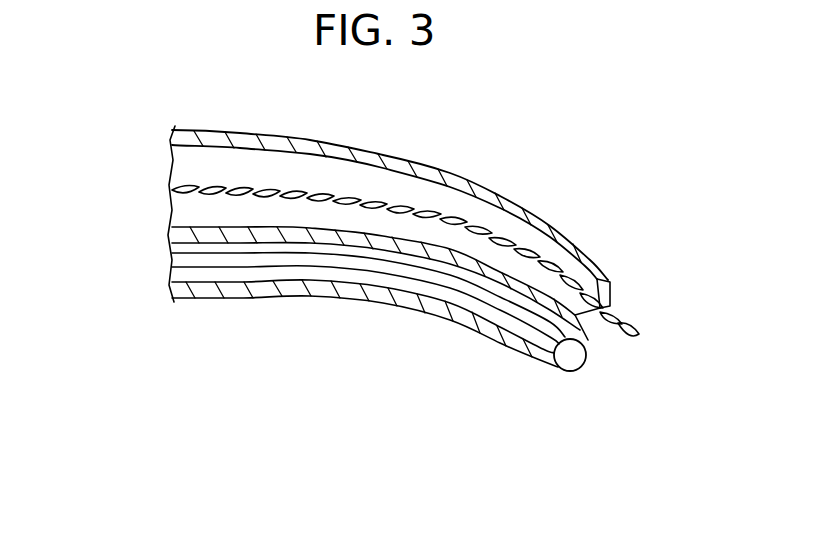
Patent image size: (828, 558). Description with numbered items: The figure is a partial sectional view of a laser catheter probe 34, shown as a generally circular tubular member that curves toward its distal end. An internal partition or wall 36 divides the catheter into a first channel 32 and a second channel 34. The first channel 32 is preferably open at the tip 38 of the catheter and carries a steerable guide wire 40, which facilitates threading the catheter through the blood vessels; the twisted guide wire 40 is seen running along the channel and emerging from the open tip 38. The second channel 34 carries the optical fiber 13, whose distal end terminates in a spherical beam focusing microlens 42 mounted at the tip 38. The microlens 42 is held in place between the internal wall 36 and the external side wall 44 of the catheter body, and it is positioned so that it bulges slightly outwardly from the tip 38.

The optical fiber 13 is at (178, 265).
The first channel 32 is at (183, 166).
The second channel 34 is at (172, 280).
The internal partition or wall 36 is at (178, 225).
The tip 38 is at (613, 290).
The steerable guide wire 40 is at (638, 333).
The spherical beam focusing microlens 42 is at (580, 369).
The external side wall 44 is at (503, 338).